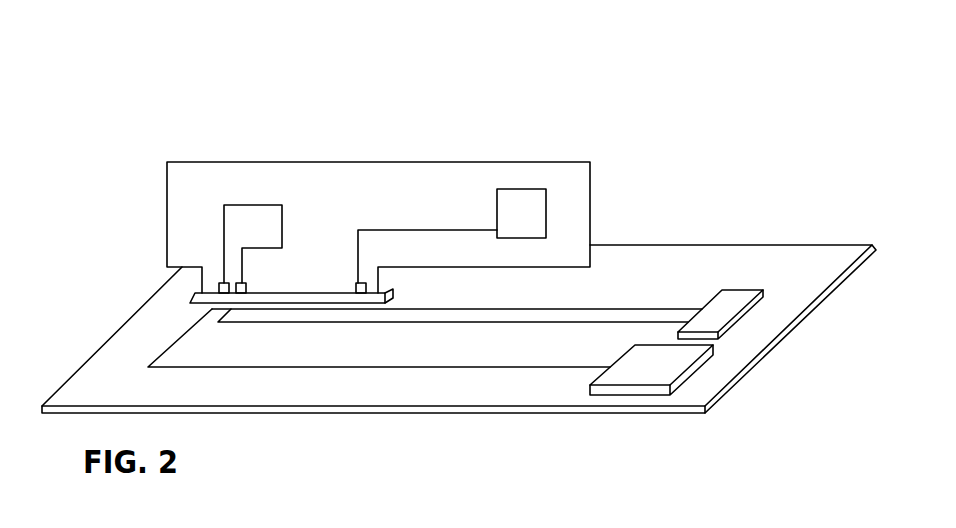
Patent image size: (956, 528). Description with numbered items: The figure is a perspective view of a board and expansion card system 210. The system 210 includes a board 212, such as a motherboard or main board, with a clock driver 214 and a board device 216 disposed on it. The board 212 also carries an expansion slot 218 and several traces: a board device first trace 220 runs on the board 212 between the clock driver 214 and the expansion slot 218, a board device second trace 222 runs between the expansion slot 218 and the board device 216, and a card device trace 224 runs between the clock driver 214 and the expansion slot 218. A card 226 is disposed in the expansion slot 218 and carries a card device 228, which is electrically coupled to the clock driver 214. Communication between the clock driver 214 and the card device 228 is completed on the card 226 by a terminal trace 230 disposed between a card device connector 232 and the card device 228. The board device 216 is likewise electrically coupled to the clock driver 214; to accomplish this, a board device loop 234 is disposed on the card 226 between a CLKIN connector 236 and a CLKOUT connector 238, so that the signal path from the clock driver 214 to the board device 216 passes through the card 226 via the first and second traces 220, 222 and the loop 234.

The system 210 is at (592, 91).
The board 212 is at (810, 258).
The clock driver 214 is at (735, 295).
The board device 216 is at (657, 363).
The expansion slot 218 is at (293, 298).
The board device first trace 220 is at (603, 323).
The board device second trace 222 is at (533, 372).
The card device trace 224 is at (483, 311).
The card 226 is at (372, 177).
The card device 228 is at (533, 202).
The terminal trace 230 is at (442, 230).
The card device connector 232 is at (357, 296).
The board device loop 234 is at (255, 205).
The CLKIN connector 236 is at (240, 293).
The CLKOUT connector 238 is at (222, 283).